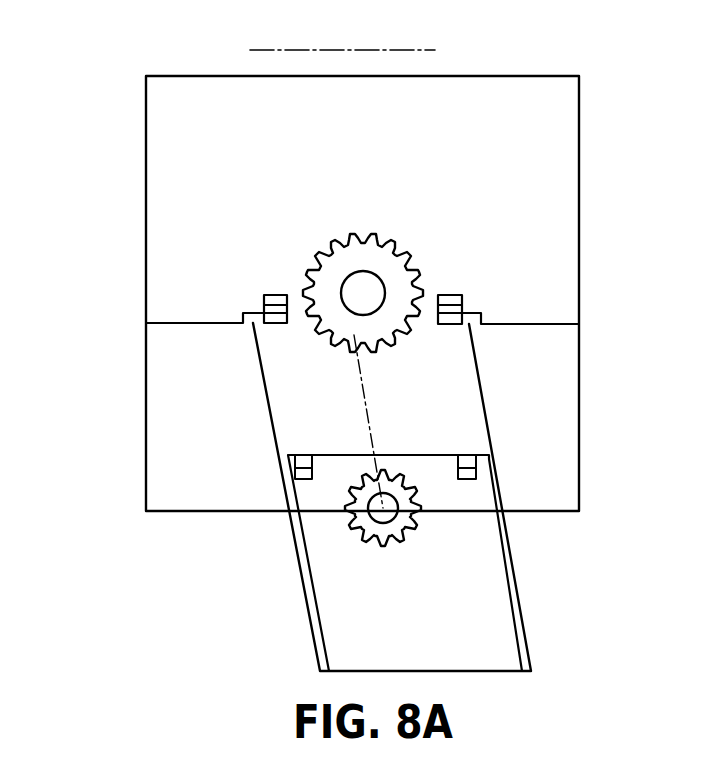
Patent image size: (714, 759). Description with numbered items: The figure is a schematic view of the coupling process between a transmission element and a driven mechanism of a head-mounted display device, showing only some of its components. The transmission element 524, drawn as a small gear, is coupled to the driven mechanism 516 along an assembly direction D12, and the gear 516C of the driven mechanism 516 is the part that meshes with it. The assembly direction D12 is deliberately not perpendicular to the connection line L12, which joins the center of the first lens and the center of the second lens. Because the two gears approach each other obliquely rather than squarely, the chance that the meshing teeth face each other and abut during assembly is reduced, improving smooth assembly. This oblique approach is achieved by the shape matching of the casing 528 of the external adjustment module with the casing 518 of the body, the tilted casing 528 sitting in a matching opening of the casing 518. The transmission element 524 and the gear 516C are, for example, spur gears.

The driven mechanism 516 is at (290, 263).
The gear 516C is at (335, 263).
The casing 518 is at (177, 415).
The transmission element 524 is at (413, 530).
The casing 528 is at (515, 608).
The connection line L12 is at (345, 49).
The assembly direction D12 is at (367, 402).